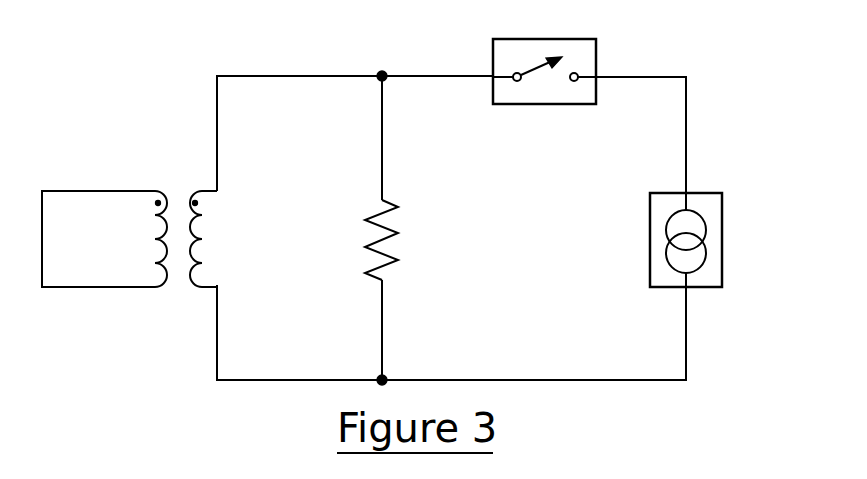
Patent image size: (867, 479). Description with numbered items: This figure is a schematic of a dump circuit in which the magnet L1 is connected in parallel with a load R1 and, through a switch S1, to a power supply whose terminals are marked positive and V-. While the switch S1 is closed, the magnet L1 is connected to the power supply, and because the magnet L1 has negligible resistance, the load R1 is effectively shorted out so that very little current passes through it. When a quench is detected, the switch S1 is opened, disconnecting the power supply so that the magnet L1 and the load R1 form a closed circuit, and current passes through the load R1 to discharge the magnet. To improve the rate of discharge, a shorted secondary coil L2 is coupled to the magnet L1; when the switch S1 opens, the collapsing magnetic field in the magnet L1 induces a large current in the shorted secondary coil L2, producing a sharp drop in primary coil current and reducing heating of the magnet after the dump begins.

The magnet L1 is at (229, 239).
The shorted secondary coil L2 is at (104, 215).
The load R1 is at (356, 221).
The switch S1 is at (512, 62).
The voltage source negative terminal V- is at (654, 303).